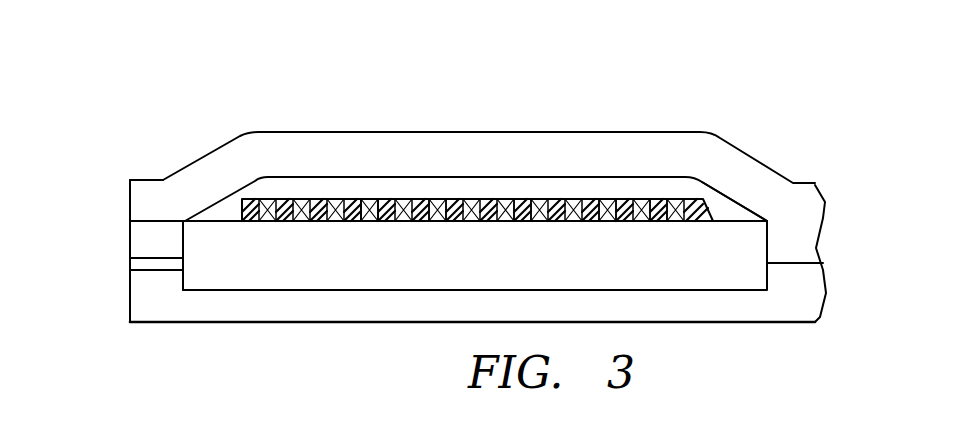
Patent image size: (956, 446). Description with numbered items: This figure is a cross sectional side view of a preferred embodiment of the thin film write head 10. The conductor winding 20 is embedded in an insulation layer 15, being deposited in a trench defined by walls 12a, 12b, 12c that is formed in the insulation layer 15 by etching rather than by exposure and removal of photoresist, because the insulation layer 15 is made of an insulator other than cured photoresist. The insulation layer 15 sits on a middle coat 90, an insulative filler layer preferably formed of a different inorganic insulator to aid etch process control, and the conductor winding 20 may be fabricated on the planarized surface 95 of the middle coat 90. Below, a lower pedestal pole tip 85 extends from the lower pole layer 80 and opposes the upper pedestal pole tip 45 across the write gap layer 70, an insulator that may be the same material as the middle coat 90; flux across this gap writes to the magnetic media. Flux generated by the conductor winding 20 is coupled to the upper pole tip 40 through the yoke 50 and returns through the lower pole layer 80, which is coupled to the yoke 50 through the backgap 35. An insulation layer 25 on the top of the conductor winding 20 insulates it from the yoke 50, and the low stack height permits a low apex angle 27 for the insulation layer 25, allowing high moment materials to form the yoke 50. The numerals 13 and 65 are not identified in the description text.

The thin film write head 10 is at (163, 123).
The trench wall 12a is at (363, 199).
The trench wall 12b is at (375, 199).
The trench wall 12c is at (437, 199).
The insulating layer 13 is at (525, 199).
The insulation layer 15 is at (669, 192).
The conductor winding 20 is at (610, 199).
The insulation layer 25 is at (573, 188).
The apex angle 27 is at (233, 218).
The backgap 35 is at (792, 237).
The upper pole tip 40 is at (143, 200).
The upper pedestal pole tip 45 is at (143, 235).
The yoke 50 is at (266, 152).
The left wall 65 is at (128, 207).
The write gap layer 70 is at (140, 265).
The lower pole layer 80 is at (227, 300).
The lower pedestal pole tip 85 is at (163, 282).
The middle coat 90 is at (293, 252).
The planarized surface 95 is at (727, 218).